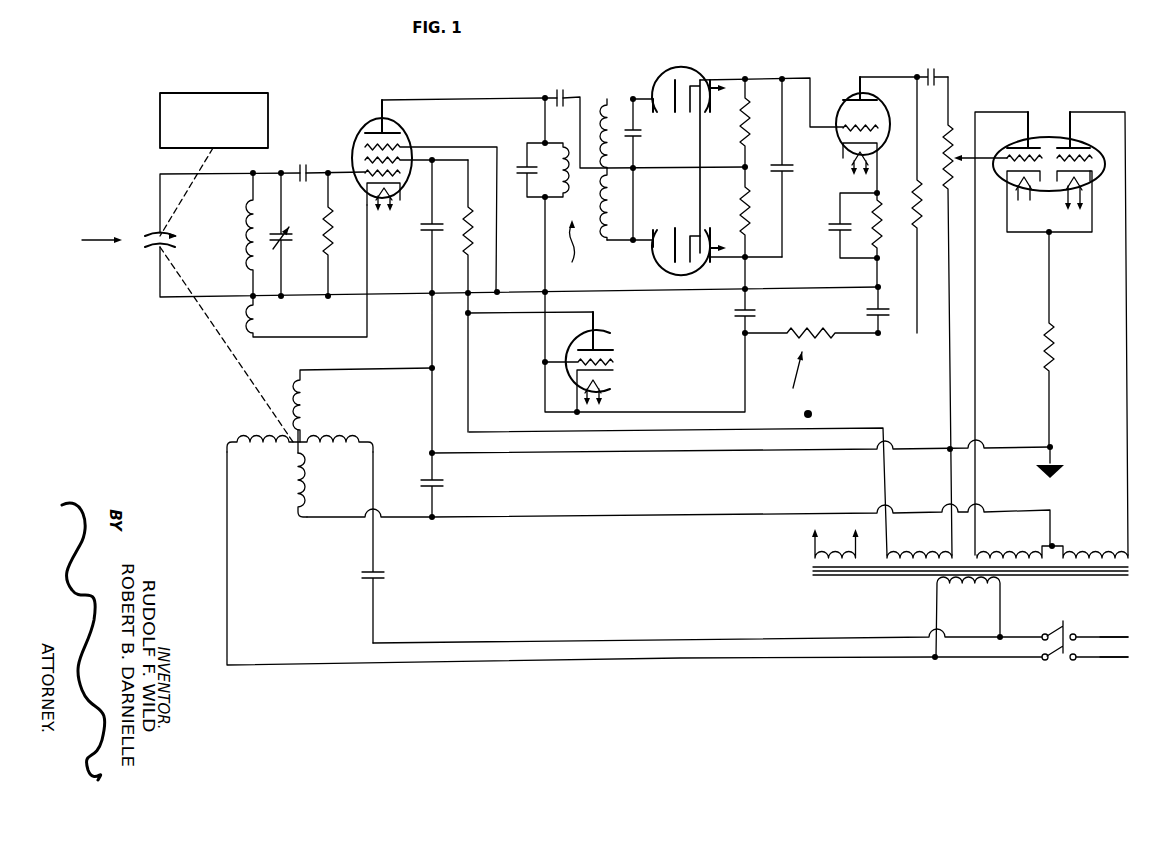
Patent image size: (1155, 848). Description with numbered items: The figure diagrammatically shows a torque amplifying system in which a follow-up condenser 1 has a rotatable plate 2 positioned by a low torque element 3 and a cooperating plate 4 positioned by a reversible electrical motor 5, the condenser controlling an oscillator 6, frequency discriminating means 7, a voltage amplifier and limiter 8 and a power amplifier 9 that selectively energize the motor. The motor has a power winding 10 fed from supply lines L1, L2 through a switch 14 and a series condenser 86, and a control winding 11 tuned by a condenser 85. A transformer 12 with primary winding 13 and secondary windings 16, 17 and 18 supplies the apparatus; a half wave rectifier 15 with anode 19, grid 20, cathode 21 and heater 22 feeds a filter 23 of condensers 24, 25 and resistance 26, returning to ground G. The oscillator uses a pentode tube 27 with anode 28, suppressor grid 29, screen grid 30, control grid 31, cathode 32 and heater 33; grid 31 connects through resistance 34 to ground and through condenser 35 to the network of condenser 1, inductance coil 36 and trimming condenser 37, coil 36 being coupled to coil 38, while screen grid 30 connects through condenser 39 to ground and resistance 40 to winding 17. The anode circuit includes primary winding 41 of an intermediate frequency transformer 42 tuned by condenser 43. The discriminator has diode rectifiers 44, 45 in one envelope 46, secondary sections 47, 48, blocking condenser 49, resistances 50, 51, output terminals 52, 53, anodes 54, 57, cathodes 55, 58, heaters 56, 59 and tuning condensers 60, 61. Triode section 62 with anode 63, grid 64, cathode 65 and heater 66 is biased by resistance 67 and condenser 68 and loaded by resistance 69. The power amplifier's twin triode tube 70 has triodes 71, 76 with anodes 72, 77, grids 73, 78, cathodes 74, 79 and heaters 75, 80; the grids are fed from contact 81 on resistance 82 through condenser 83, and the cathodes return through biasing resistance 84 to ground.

The follow-up condenser 1 is at (95, 240).
The condenser plate 2 is at (153, 232).
The low torque element 3 is at (192, 88).
The condenser plate 4 is at (151, 250).
The reversible electrical motor 5 is at (283, 478).
The oscillator 6 is at (345, 98).
The frequency discriminating means 7 is at (600, 75).
The voltage amplifier and limiter 8 is at (845, 60).
The power amplifier 9 is at (1044, 80).
The power winding 10 is at (308, 458).
The control winding 11 is at (305, 412).
The transformer 12 is at (840, 577).
The primary winding 13 is at (975, 590).
The switch 14 is at (1050, 631).
The half wave rectifier 15 is at (655, 338).
The low voltage secondary winding 16 is at (847, 551).
The low voltage secondary winding 17 is at (916, 552).
The center tapped high voltage secondary winding 18 is at (1007, 553).
The anode 19 is at (608, 346).
The control grid 20 is at (614, 360).
The cathode 21 is at (614, 371).
The heater filament 22 is at (613, 385).
The filter 23 is at (796, 385).
The condenser 24 is at (755, 315).
The condenser 25 is at (866, 313).
The resistance 26 is at (811, 334).
The pentode tube 27 is at (372, 118).
The anode 28 is at (402, 128).
The suppressor grid 29 is at (405, 146).
The screen grid 30 is at (365, 156).
The control grid 31 is at (364, 171).
The cathode 32 is at (399, 191).
The heater filament 33 is at (393, 208).
The resistance 34 is at (333, 228).
The condenser 35 is at (300, 164).
The inductance coil 36 is at (253, 214).
The trimming condenser 37 is at (290, 238).
The coil 38 is at (255, 329).
The condenser 39 is at (420, 231).
The resistance 40 is at (464, 216).
The primary winding 41 is at (558, 160).
The intermediate frequency transformer 42 is at (567, 249).
The condenser 43 is at (520, 170).
The diode rectifier 44 is at (677, 65).
The diode rectifier 45 is at (682, 273).
The envelope 46 is at (702, 70).
The secondary winding section 47 is at (606, 128).
The secondary winding section 48 is at (603, 218).
The blocking condenser 49 is at (558, 90).
The resistance 50 is at (740, 121).
The resistance 51 is at (740, 208).
The terminal 52 is at (784, 78).
The terminal 53 is at (749, 260).
The anode 54 is at (652, 82).
The cathode 55 is at (673, 110).
The heater filament 56 is at (696, 110).
The anode 57 is at (652, 257).
The cathode 58 is at (688, 229).
The heater filament 59 is at (697, 218).
The condenser 60 is at (641, 134).
The condenser 61 is at (771, 168).
The triode section 62 is at (880, 104).
The anode 63 is at (840, 99).
The control grid 64 is at (843, 125).
The cathode 65 is at (842, 143).
The heater filament 66 is at (845, 162).
The resistance 67 is at (872, 219).
The condenser 68 is at (832, 227).
The resistance 69 is at (910, 196).
The twin triode tube 70 is at (1044, 136).
The triode 71 is at (1028, 114).
The anode 72 is at (1010, 140).
The control grid 73 is at (1005, 186).
The cathode 74 is at (1012, 200).
The heater filament 75 is at (1022, 199).
The triode 76 is at (1070, 116).
The anode 77 is at (1085, 143).
The control grid 78 is at (1095, 160).
The cathode 79 is at (1090, 187).
The heater filament 80 is at (1088, 199).
The contact 81 is at (952, 132).
The resistance 82 is at (947, 150).
The condenser 83 is at (926, 69).
The biasing resistance 84 is at (1060, 347).
The condenser 85 is at (446, 488).
The condenser 86 is at (390, 577).
The ground G is at (1058, 470).
The alternating current supply line L1 is at (1110, 635).
The alternating current supply line L2 is at (1100, 658).